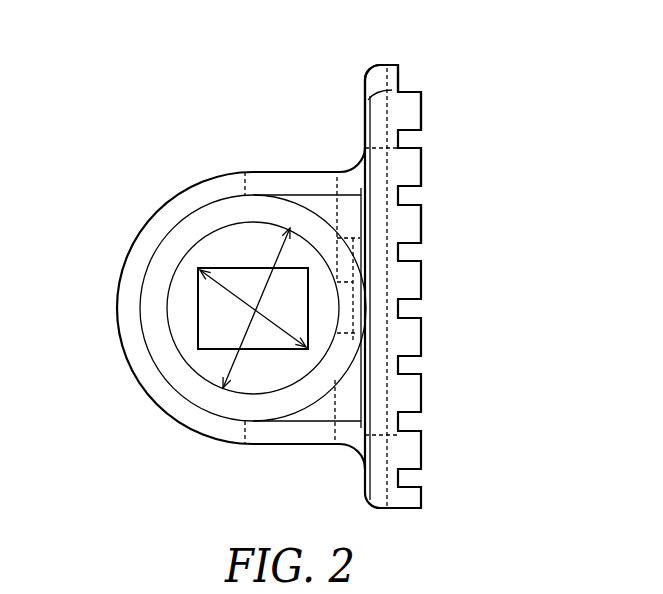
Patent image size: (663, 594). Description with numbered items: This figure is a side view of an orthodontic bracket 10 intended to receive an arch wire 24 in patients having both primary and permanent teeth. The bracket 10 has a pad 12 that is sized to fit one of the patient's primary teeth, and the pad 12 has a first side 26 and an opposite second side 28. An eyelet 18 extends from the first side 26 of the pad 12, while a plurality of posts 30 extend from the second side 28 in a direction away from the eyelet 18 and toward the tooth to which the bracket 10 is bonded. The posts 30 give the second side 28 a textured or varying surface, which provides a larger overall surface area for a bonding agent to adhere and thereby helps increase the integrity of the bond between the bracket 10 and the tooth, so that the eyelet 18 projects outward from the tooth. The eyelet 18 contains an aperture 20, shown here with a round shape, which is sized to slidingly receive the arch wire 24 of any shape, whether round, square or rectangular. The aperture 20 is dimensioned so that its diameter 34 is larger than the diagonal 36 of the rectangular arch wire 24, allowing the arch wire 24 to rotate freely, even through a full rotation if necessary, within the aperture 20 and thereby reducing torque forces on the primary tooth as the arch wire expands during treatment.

The orthodontic bracket 10 is at (524, 92).
The pad 12 is at (385, 509).
The eyelet 18 is at (195, 193).
The aperture 20 is at (251, 238).
The arch wire 24 is at (309, 305).
The first side 26 is at (366, 97).
The second side 28 is at (399, 77).
The posts 30 is at (423, 108).
The diameter 34 is at (228, 363).
The diagonal 36 is at (228, 292).